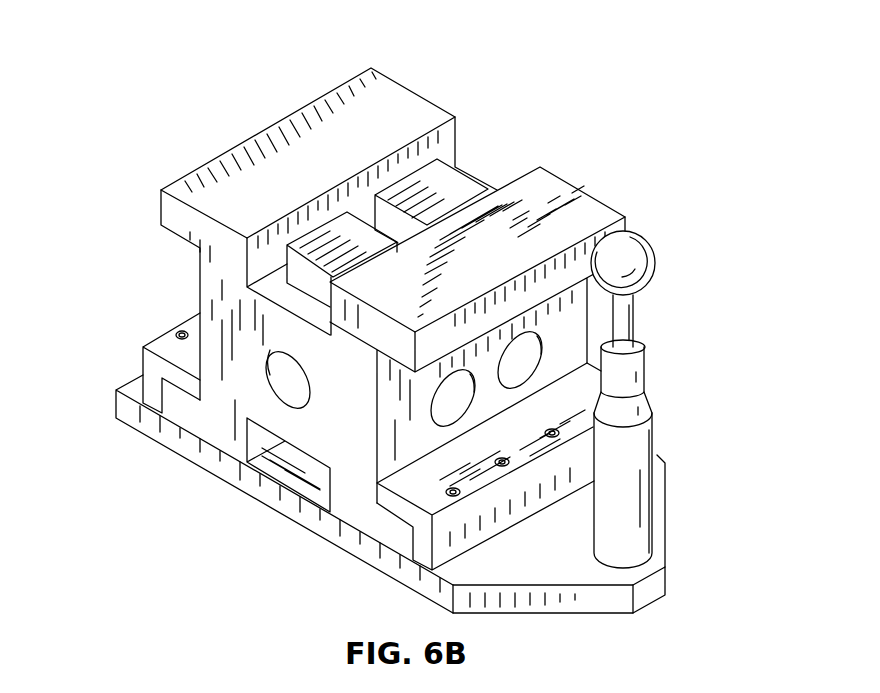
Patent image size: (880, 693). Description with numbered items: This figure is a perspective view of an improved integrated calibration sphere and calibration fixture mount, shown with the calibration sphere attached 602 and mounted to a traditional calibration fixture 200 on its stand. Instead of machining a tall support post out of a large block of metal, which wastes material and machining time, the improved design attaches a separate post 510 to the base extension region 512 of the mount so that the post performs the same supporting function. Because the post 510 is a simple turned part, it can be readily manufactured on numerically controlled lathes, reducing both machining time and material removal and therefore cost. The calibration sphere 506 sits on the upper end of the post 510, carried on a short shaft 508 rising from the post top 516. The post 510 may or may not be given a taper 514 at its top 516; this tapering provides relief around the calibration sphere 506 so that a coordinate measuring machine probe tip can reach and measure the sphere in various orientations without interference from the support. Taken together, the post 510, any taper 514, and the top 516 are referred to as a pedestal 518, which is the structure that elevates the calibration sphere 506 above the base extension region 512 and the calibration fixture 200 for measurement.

The integrated calibration sphere and calibration fixture mount with calibration sph 602 is at (150, 64).
The calibration fixture 200 is at (192, 143).
The base extension region 512 is at (517, 562).
The pedestal 518 is at (737, 343).
The calibration sphere 506 is at (639, 252).
The shaft 508 is at (634, 312).
The top 516 is at (639, 347).
The taper 514 is at (648, 403).
The post 510 is at (653, 442).